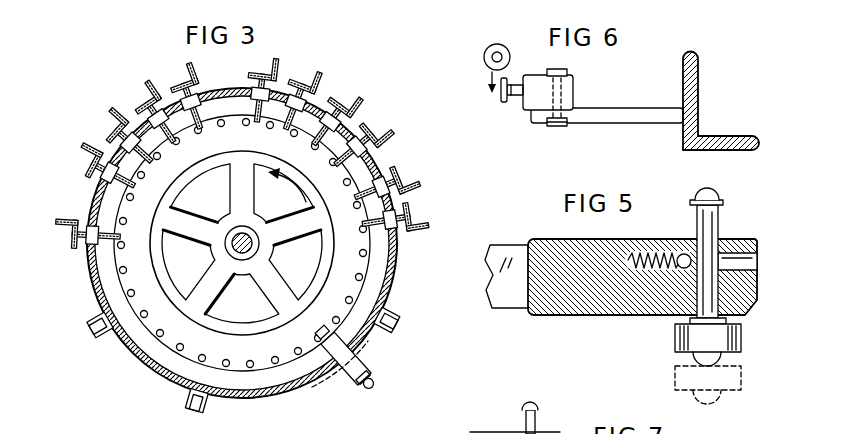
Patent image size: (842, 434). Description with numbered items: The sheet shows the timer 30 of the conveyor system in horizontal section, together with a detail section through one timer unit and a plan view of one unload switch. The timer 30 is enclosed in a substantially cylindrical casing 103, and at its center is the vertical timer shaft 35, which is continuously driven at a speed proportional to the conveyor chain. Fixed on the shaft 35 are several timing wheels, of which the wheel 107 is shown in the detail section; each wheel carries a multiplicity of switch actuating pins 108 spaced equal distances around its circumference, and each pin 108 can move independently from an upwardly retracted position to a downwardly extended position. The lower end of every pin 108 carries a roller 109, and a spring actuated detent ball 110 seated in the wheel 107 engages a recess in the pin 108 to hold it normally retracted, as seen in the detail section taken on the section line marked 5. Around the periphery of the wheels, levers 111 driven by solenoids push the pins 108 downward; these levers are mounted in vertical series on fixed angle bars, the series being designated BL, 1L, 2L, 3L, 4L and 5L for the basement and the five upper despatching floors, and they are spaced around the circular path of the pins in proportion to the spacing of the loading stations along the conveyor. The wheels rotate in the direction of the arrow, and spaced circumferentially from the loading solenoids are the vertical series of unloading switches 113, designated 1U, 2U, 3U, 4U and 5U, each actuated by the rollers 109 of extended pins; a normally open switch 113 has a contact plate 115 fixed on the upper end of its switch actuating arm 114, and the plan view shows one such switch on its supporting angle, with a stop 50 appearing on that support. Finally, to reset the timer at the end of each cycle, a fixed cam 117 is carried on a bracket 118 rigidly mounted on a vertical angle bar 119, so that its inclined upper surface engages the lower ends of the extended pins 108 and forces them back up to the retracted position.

In FIG. 3, the timer 30 is at (132, 362).
In FIG. 3, the casing 103 is at (92, 278).
In FIG. 3, the pin 108 is at (250, 360).
In FIG. 6, the pin 108 is at (510, 58).
In FIG. 5, the pin 108 is at (713, 234).
In FIG. 7, the pin 108 is at (538, 414).
In FIG. 3, the timer shaft 35 is at (238, 248).
In FIG. 3, the unloading switch 113 is at (187, 112).
In FIG. 6, the unloading switch 113 is at (565, 92).
In FIG. 3, the lever 111 is at (332, 130).
In FIG. 3, the section line indicator 5 is at (360, 252).
In FIG. 3, the unloading switch series 1U is at (66, 235).
In FIG. 3, the unloading switch series 2U is at (86, 163).
In FIG. 3, the unloading switch series 3U is at (111, 125).
In FIG. 3, the unloading switch series 4U is at (143, 96).
In FIG. 3, the unloading switch series 5U is at (183, 74).
In FIG. 3, the pin actuating lever and solenoid series 1L is at (412, 174).
In FIG. 3, the pin actuating lever and solenoid series 2L is at (379, 128).
In FIG. 3, the pin actuating lever and solenoid series 3L is at (346, 97).
In FIG. 3, the pin actuating lever and solenoid series 4L is at (306, 75).
In FIG. 3, the pin actuating lever and solenoid series 5L is at (265, 64).
In FIG. 3, the pin actuating lever and solenoid series BL is at (426, 214).
In FIG. 3, the fixed cam 117 is at (348, 340).
In FIG. 3, the bracket 118 is at (346, 362).
In FIG. 3, the angle bar 119 is at (340, 400).
In FIG. 6, the roller 109 is at (484, 58).
In FIG. 5, the roller 109 is at (675, 375).
In FIG. 6, the contact plate 115 is at (500, 94).
In FIG. 6, the switch actuating arm 114 is at (510, 103).
In FIG. 6, the stop 50 is at (697, 118).
In FIG. 5, the wheel 107 is at (572, 292).
In FIG. 5, the detent ball 110 is at (684, 253).